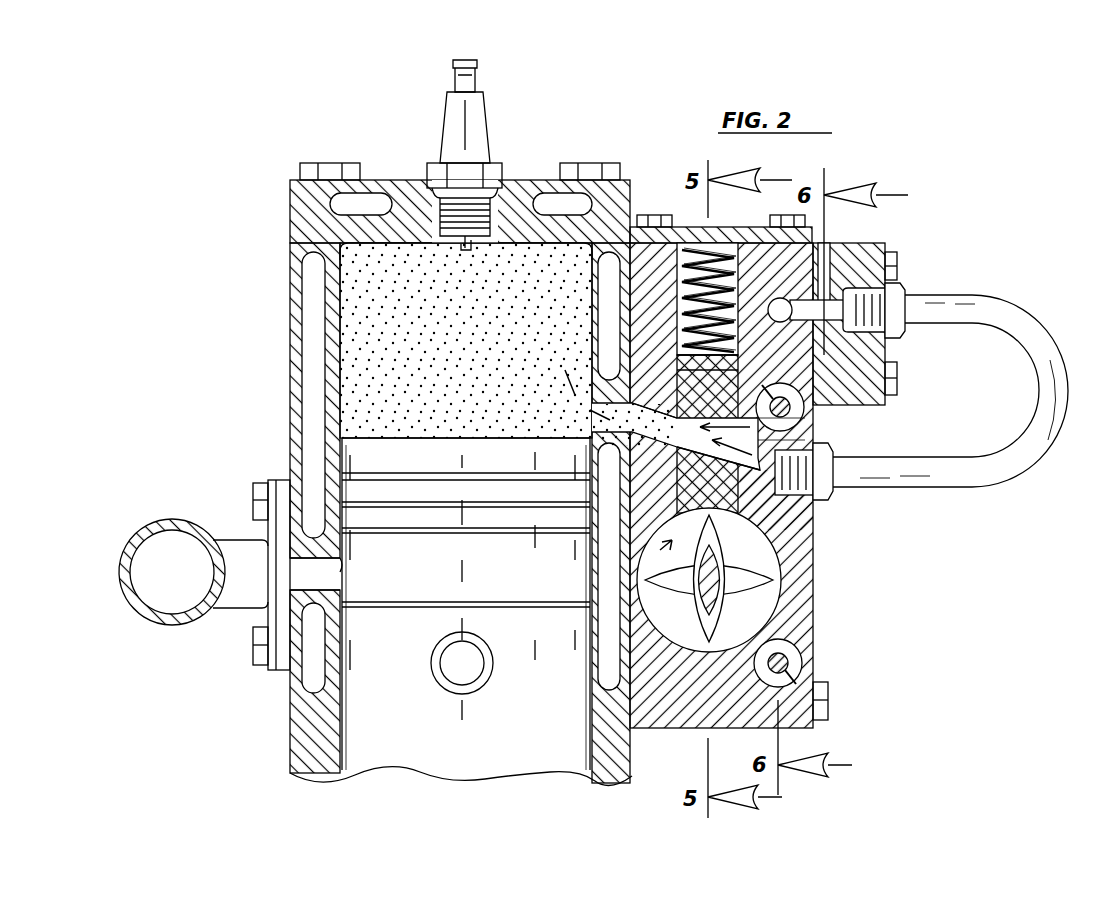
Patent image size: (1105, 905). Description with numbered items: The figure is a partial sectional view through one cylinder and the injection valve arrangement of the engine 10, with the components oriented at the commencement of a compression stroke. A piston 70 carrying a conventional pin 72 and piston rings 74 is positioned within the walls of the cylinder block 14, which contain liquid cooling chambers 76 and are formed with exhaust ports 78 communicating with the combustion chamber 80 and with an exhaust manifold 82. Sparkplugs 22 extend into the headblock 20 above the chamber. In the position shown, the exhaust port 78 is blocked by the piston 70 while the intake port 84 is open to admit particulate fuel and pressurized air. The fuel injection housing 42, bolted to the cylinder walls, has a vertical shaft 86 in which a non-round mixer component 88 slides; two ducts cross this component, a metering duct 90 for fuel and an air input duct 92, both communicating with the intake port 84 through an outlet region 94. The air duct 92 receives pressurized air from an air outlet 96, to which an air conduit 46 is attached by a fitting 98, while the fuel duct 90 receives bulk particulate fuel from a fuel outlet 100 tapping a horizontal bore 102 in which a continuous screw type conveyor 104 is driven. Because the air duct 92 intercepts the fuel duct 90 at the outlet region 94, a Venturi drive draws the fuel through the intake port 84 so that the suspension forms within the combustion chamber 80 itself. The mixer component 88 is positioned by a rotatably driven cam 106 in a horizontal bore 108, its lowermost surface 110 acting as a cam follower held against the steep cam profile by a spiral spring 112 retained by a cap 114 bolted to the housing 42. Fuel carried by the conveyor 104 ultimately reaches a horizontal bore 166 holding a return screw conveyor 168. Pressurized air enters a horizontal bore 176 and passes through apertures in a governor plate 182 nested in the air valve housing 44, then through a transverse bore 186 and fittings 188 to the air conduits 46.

The internal combustion engine 10 is at (985, 124).
The cylinder block 14 is at (290, 326).
The headblock 20 is at (548, 180).
The sparkplugs 22 is at (478, 118).
The fuel injection housing 42 is at (815, 590).
The air valve housing 44 is at (885, 352).
The air conduits 46 is at (1000, 300).
The piston 70 is at (432, 745).
The pin 72 is at (442, 664).
The piston rings 74 is at (418, 530).
The liquid cooling chambers 76 is at (608, 306).
The exhaust ports 78 is at (342, 571).
The combustion chamber 80 is at (474, 346).
The exhaust manifold 82 is at (180, 520).
The intake port 84 is at (600, 418).
The vertical shaft 86 is at (680, 245).
The mixer component 88 is at (730, 370).
The metering duct 90 is at (714, 425).
The air input duct 92 is at (700, 448).
The outlet region 94 is at (660, 425).
The air outlet 96 is at (795, 512).
The fitting 98 is at (822, 497).
The fuel outlet 100 is at (828, 442).
The horizontal bore 102 is at (812, 420).
The screw type conveyor 104 is at (806, 413).
The cam 106 is at (715, 602).
The horizontal bore 108 is at (640, 596).
The lowermost surface 110 is at (722, 515).
The spiral spring 112 is at (710, 252).
The cap 114 is at (762, 227).
The horizontal bore 166 is at (805, 668).
The screw conveyor 168 is at (790, 658).
The horizontal bore 176 is at (786, 298).
The governor plate 182 is at (825, 265).
The transverse bore 186 is at (852, 300).
The fittings 188 is at (900, 292).